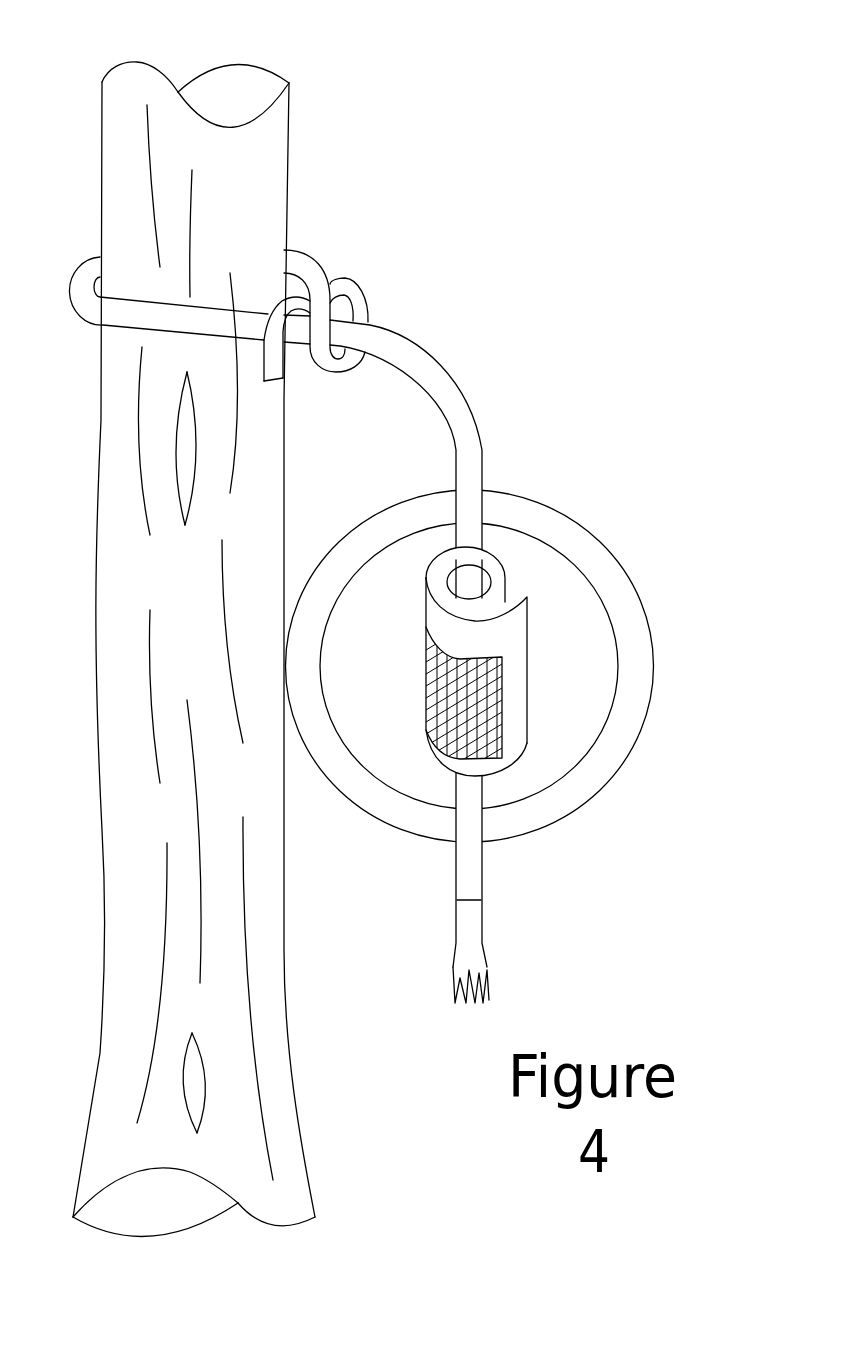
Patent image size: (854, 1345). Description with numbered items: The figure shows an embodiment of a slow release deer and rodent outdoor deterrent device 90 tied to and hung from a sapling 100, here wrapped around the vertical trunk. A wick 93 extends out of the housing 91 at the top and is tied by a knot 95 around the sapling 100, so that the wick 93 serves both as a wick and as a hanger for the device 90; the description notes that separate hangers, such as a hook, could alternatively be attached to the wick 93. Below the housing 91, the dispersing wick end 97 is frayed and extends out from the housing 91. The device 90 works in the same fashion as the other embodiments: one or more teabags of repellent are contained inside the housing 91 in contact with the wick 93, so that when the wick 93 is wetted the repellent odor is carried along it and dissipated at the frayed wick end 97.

The sapling 100 is at (313, 127).
The wick 93 is at (308, 554).
The knot 95 is at (478, 280).
The slow release deer and rodent outdoor deterrent device 90 is at (535, 654).
The housing 91 is at (622, 763).
The dispersing wick end 97 is at (457, 965).